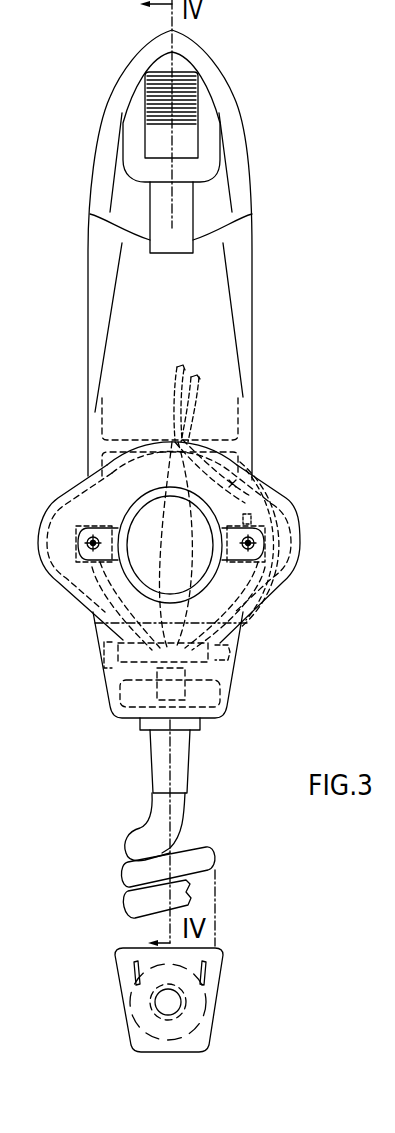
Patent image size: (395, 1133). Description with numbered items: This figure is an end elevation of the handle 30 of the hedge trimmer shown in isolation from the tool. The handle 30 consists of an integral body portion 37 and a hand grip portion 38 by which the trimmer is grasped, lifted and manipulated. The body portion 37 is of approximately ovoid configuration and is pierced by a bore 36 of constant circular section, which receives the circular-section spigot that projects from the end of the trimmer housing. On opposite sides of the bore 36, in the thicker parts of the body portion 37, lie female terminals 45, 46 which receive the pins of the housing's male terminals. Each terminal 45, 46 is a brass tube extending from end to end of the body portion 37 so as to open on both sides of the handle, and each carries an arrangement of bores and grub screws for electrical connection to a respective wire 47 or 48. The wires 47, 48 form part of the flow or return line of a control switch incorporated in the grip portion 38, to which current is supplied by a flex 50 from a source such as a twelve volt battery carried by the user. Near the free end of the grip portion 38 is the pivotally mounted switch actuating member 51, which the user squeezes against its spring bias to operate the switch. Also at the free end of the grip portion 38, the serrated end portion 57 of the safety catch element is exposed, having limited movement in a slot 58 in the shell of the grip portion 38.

The handle 30 is at (280, 393).
The bore 36 is at (170, 545).
The body portion 37 is at (300, 528).
The hand grip portion 38 is at (252, 323).
The female terminal 45 is at (92, 538).
The female terminal 46 is at (250, 548).
The wire 47 is at (90, 590).
The wire 48 is at (247, 473).
The flex 50 is at (212, 860).
The switch actuating member 51 is at (190, 208).
The end portion 57 is at (190, 97).
The slot 58 is at (192, 145).